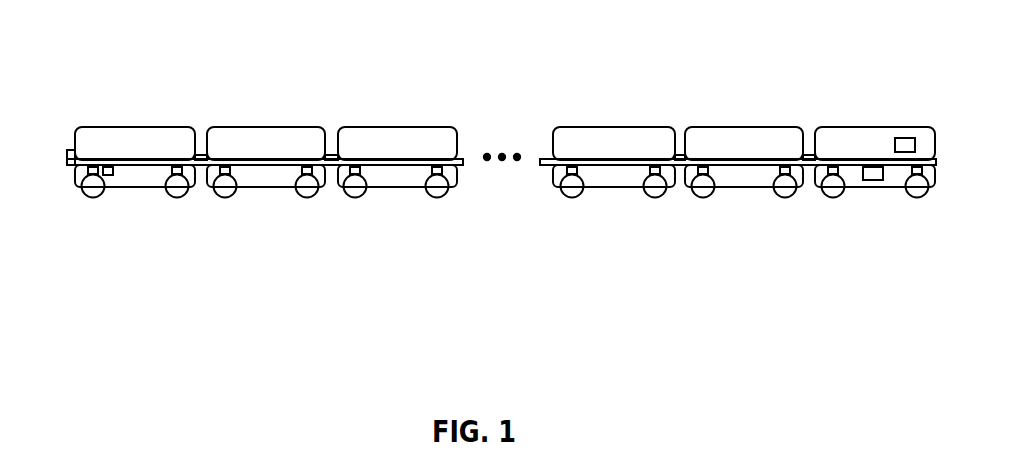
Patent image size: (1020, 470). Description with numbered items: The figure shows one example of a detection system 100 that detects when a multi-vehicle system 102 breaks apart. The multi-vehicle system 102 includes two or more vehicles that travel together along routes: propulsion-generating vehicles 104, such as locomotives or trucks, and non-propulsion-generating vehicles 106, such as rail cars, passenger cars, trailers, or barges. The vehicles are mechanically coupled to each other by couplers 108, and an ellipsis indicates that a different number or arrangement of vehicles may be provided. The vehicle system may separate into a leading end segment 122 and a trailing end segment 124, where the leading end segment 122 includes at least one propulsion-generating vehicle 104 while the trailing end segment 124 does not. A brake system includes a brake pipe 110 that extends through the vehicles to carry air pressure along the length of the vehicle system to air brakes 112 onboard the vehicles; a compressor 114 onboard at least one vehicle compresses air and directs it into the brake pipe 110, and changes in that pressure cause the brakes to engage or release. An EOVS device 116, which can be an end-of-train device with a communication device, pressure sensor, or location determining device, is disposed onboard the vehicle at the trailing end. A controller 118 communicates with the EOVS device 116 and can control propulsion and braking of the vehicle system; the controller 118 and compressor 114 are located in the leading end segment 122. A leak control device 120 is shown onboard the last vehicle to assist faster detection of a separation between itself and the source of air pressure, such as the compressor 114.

The detection system 100 is at (488, 159).
The multi-vehicle system 102 is at (488, 188).
The propulsion-generating vehicle 104 is at (817, 160).
The non-propulsion-generating vehicle 106 is at (375, 159).
The coupler 108 is at (334, 156).
The brake pipe 110 is at (404, 188).
The air brake 112 is at (568, 170).
The compressor 114 is at (856, 212).
The EOVS device 116 is at (72, 150).
The controller 118 is at (908, 138).
The leak control device 120 is at (110, 176).
The leading end segment 122 is at (553, 65).
The trailing end segment 124 is at (75, 65).